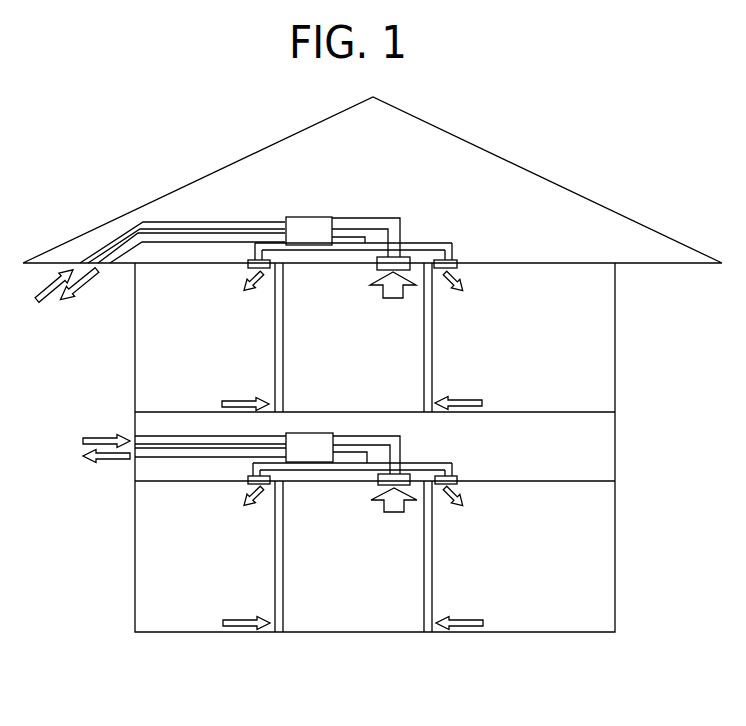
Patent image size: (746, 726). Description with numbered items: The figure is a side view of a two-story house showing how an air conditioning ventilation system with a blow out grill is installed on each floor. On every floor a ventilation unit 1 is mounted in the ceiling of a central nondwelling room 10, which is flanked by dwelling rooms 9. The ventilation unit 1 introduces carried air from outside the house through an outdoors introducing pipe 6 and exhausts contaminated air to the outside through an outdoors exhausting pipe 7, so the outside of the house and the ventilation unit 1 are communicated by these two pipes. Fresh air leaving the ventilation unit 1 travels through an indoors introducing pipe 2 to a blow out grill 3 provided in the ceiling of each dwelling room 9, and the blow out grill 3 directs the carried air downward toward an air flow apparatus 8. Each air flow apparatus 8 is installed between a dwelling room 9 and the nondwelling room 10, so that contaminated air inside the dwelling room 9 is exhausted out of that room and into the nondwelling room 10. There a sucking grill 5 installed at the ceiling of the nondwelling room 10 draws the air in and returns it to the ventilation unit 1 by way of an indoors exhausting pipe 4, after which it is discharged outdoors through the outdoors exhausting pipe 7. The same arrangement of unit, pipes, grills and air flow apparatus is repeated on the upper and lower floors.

The ventilation unit 1 is at (317, 222).
The indoors introducing pipe 2 is at (250, 252).
The blow out grill 3 is at (248, 264).
The indoors exhausting pipe 4 is at (393, 237).
The sucking grill 5 is at (397, 269).
The outdoors introducing pipe 6 is at (235, 225).
The outdoors exhausting pipe 7 is at (177, 237).
The air flow apparatus 8 is at (280, 408).
The dwelling room 9 is at (173, 391).
The nondwelling room 10 is at (337, 387).